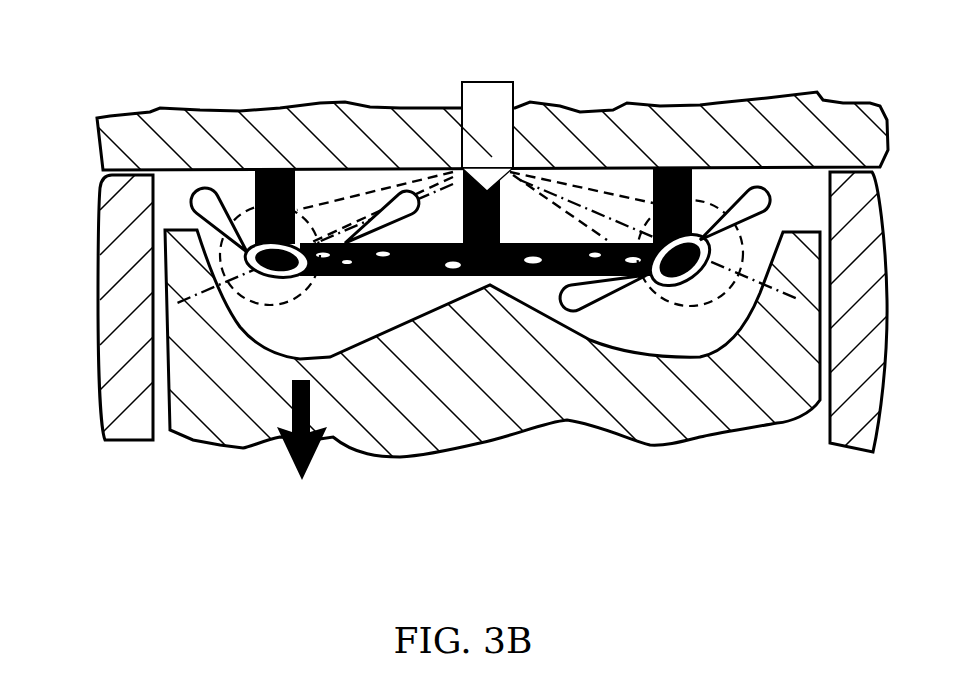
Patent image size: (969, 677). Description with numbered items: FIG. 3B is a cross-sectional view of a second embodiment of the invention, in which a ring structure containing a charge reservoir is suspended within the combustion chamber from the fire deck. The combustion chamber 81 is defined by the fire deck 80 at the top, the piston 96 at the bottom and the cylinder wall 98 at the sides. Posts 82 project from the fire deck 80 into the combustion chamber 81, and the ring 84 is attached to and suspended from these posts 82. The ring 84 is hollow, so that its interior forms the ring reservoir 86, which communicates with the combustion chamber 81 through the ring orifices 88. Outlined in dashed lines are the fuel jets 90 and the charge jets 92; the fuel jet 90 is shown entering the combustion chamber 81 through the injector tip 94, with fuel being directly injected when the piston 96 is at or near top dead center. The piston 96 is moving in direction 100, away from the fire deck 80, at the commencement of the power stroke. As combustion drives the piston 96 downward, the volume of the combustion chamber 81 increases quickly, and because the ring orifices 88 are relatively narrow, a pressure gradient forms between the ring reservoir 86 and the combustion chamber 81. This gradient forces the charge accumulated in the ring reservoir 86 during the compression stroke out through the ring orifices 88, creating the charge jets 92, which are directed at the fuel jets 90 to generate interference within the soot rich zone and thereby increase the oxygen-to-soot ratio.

The fire deck 80 is at (478, 108).
The combustion chamber 81 is at (267, 320).
The posts 82 is at (137, 230).
The ring 84 is at (577, 240).
The ring reservoir 86 is at (683, 283).
The ring orifices 88 is at (633, 277).
The fuel jets 90 is at (253, 187).
The charge jets 92 is at (430, 277).
The injector tip 94 is at (445, 108).
The piston 96 is at (737, 373).
The cylinder wall 98 is at (114, 128).
The direction 100 is at (284, 444).